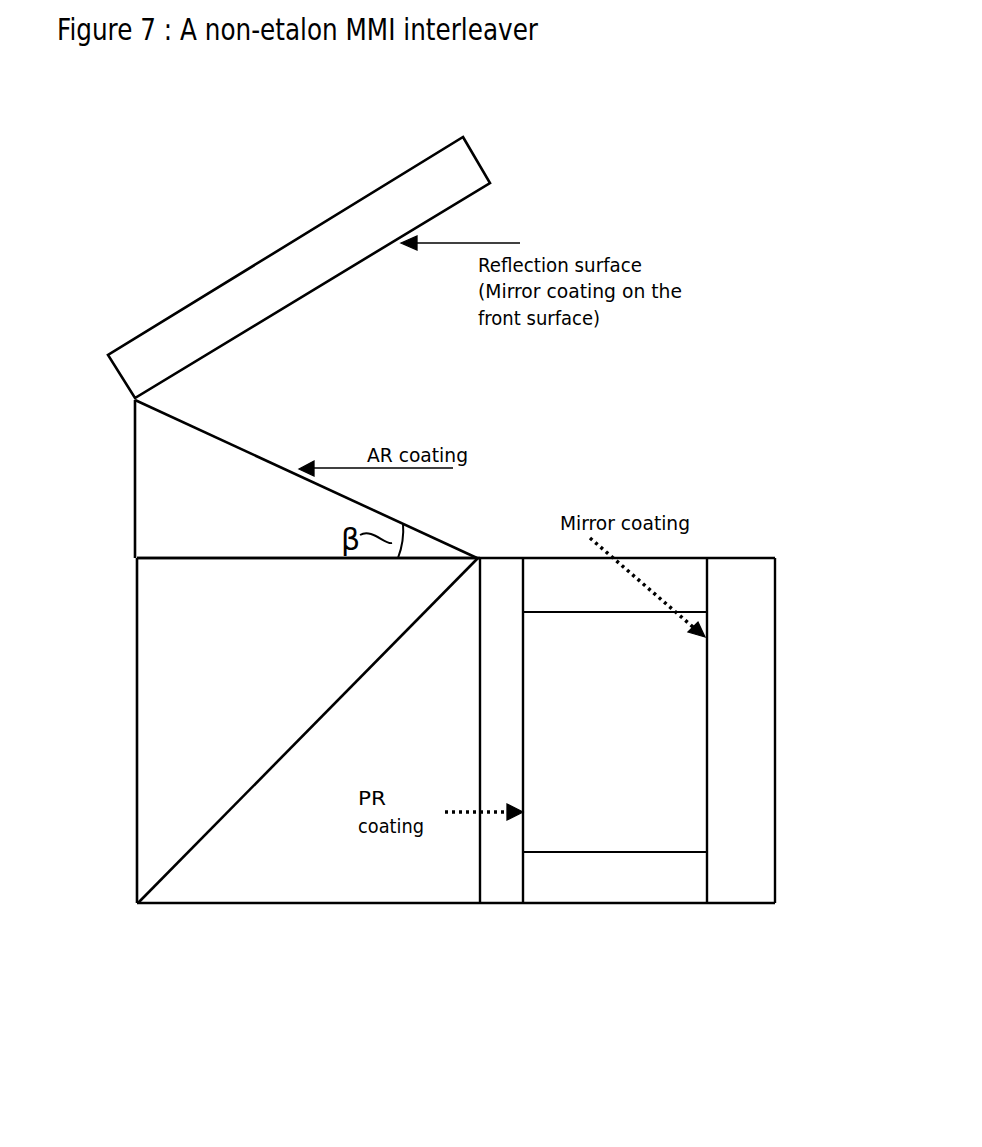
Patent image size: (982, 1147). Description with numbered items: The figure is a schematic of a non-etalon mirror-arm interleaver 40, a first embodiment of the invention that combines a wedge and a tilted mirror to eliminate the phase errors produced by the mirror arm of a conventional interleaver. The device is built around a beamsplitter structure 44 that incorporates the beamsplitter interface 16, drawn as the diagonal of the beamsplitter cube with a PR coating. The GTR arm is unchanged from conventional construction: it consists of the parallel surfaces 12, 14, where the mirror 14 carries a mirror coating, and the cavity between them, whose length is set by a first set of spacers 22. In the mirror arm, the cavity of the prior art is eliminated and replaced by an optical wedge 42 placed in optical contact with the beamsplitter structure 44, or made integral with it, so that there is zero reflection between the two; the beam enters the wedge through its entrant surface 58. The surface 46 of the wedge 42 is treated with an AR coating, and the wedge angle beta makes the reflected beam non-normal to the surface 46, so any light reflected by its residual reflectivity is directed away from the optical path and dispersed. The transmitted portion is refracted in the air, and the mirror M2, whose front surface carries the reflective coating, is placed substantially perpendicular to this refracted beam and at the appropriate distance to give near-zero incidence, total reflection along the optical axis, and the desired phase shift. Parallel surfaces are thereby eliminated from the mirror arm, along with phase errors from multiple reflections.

The non-etalon mirror-arm interleaver 40 is at (714, 215).
The mirror M2 is at (463, 198).
The optical wedge 42 is at (167, 480).
The surface of the wedge 46 is at (242, 450).
The entrant surface of the wedge 58 is at (193, 558).
The beamsplitter structure 44 is at (168, 737).
The beamsplitter interface 16 is at (240, 805).
The etalon surface 12 is at (527, 787).
The first set of spacers 22 is at (636, 883).
The reflective mirror 14 is at (700, 787).